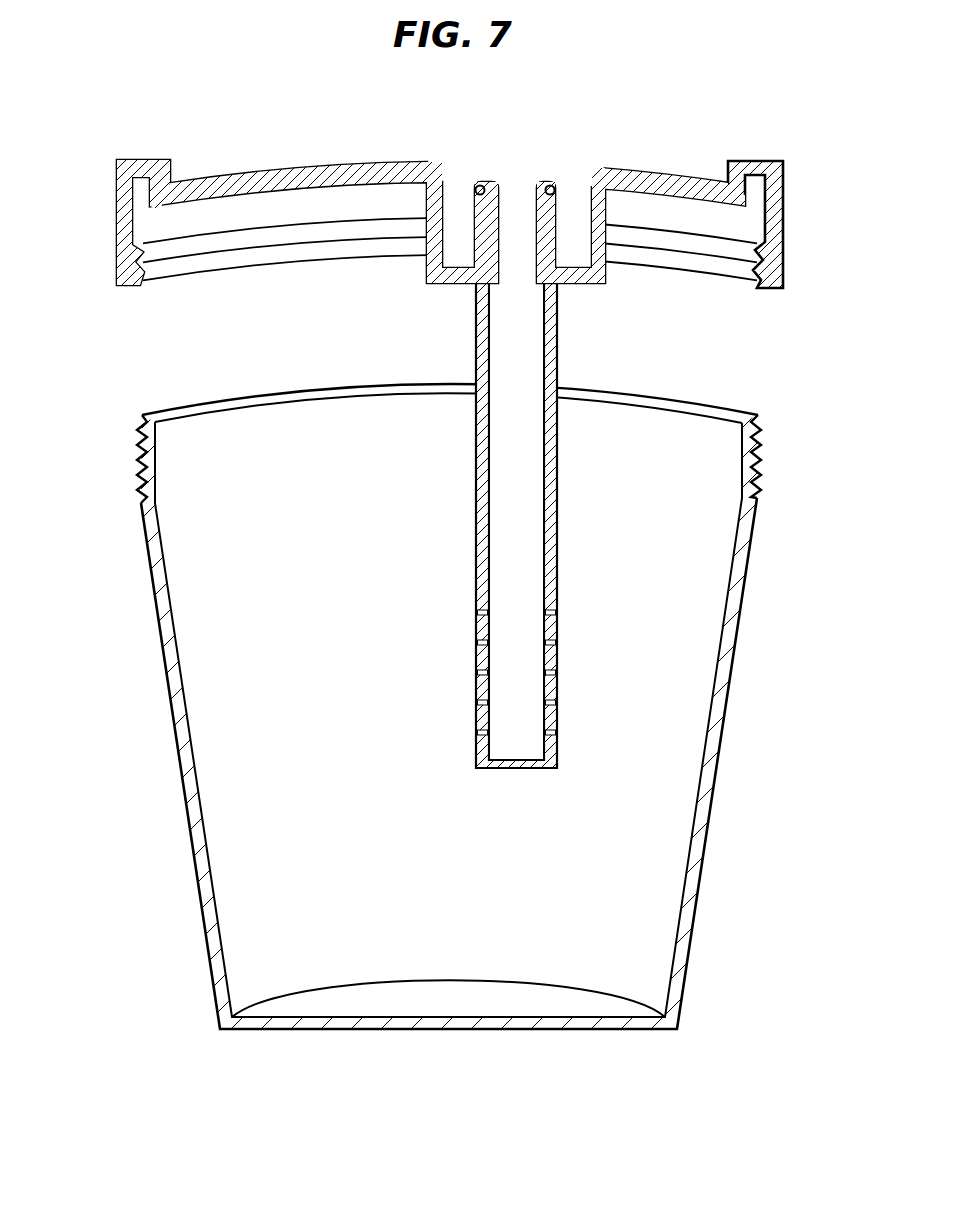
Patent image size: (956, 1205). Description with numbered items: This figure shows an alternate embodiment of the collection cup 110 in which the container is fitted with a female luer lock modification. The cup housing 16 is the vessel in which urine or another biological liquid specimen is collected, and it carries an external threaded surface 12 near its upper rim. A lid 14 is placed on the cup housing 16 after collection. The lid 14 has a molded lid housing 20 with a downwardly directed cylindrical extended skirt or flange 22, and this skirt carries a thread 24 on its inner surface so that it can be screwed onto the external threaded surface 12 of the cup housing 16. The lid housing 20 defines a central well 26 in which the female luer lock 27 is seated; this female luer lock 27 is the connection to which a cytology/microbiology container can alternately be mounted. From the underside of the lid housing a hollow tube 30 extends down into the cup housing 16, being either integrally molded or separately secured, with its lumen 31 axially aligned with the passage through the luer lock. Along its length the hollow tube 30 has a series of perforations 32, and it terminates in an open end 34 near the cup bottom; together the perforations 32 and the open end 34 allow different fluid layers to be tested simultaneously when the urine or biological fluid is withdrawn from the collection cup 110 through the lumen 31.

The external threaded surface 12 is at (758, 463).
The lid 14 is at (468, 215).
The cup housing 16 is at (714, 792).
The lid housing 20 is at (312, 166).
The cylindrical extended skirt or flange 22 is at (117, 249).
The thread 24 is at (148, 268).
The well 26 is at (450, 164).
The female luer lock 27 is at (540, 180).
The hollow tube 30 is at (525, 557).
The lumen 31 is at (510, 330).
The perforations 32 is at (549, 651).
The open end 34 is at (517, 770).
The collection cup 110 is at (498, 706).